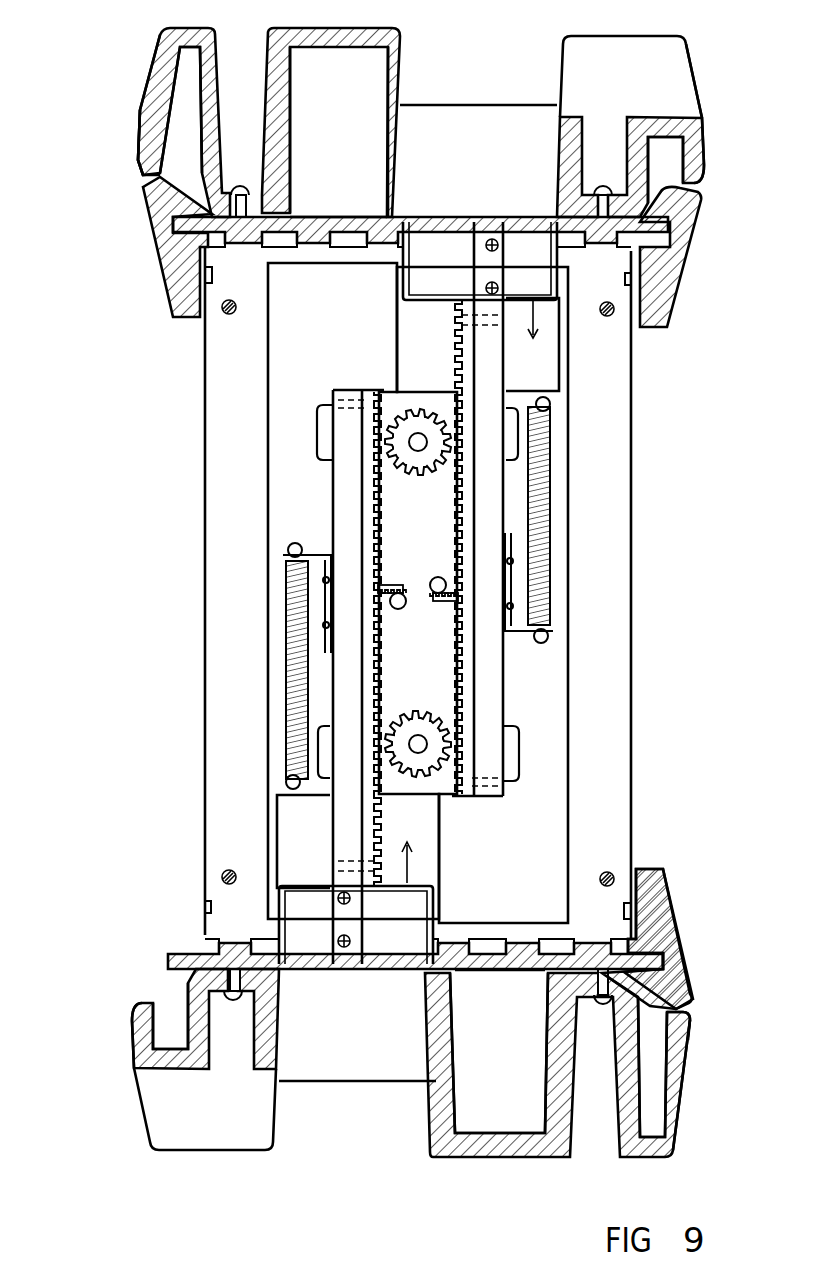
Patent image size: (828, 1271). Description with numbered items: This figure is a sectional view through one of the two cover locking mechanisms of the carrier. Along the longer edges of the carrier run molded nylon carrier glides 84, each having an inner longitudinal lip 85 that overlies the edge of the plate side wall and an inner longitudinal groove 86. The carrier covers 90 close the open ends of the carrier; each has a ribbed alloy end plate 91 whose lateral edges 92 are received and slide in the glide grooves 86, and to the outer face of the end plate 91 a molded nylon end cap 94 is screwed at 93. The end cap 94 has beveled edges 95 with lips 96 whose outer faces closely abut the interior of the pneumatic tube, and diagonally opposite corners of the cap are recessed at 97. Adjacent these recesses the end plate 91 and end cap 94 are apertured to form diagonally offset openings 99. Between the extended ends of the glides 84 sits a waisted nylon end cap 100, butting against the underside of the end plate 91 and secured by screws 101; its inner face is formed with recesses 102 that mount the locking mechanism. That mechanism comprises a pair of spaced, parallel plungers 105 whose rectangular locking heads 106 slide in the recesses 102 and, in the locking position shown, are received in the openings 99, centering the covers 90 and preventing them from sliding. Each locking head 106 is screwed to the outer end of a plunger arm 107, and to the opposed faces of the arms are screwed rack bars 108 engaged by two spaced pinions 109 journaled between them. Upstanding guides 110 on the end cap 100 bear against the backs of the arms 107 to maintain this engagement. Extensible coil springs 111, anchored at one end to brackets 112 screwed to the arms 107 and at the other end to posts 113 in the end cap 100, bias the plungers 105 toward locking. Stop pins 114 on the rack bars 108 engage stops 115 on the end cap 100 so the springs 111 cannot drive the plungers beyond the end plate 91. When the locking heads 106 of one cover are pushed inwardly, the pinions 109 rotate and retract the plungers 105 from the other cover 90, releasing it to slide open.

The carrier glide 84 is at (173, 276).
The inner longitudinal lip 85 is at (217, 248).
The inner longitudinal groove 86 is at (173, 225).
The carrier cover 90 is at (332, 28).
The end plate 91 is at (332, 214).
The lateral edge 92 is at (166, 176).
The screw 93 is at (236, 185).
The end cap 94 is at (401, 74).
The beveled edge 95 is at (147, 60).
The lip 96 is at (138, 152).
The recess 97 is at (640, 36).
The opening 99 is at (473, 221).
The waisted end cap 100 is at (205, 627).
The screw 101 is at (232, 317).
The recess 102 is at (268, 400).
The plunger 105 is at (338, 483).
The locking head 106 is at (535, 243).
The plunger arm 107 is at (500, 362).
The rack bar 108 is at (458, 652).
The pinion 109 is at (417, 477).
The guide 110 is at (316, 437).
The coil spring 111 is at (550, 523).
The bracket 112 is at (318, 558).
The post 113 is at (548, 408).
The stop pin 114 is at (393, 584).
The stop 115 is at (441, 578).